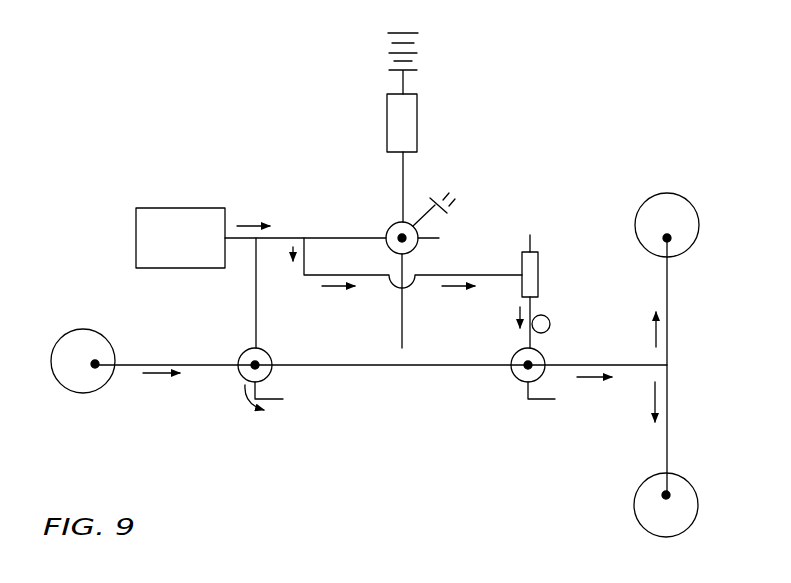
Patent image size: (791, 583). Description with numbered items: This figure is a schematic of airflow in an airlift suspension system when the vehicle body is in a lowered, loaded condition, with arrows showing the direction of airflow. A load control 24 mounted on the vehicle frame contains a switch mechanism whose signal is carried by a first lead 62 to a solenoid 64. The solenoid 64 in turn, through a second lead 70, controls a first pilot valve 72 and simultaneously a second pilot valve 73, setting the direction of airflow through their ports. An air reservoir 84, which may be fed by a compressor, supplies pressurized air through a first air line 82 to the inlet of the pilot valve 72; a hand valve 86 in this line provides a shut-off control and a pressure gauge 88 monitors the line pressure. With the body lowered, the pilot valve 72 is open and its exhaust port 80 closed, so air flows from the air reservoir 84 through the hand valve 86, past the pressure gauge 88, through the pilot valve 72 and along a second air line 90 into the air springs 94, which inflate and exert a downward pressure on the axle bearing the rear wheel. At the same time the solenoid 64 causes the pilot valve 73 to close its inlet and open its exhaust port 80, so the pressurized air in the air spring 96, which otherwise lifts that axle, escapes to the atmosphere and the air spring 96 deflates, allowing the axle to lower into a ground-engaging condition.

The load control 24 is at (416, 131).
The first lead 62 is at (403, 183).
The solenoid 64 is at (389, 232).
The second lead 70 is at (380, 366).
The first pilot valve 72 is at (545, 355).
The second pilot valve 73 is at (265, 352).
The exhaust port 80 is at (283, 400).
The first air line 82 is at (240, 241).
The air reservoir 84 is at (162, 222).
The hand valve 86 is at (538, 275).
The pressure gauge 88 is at (549, 318).
The second air line 90 is at (668, 360).
The air springs 94 is at (692, 220).
The air spring 96 is at (70, 383).